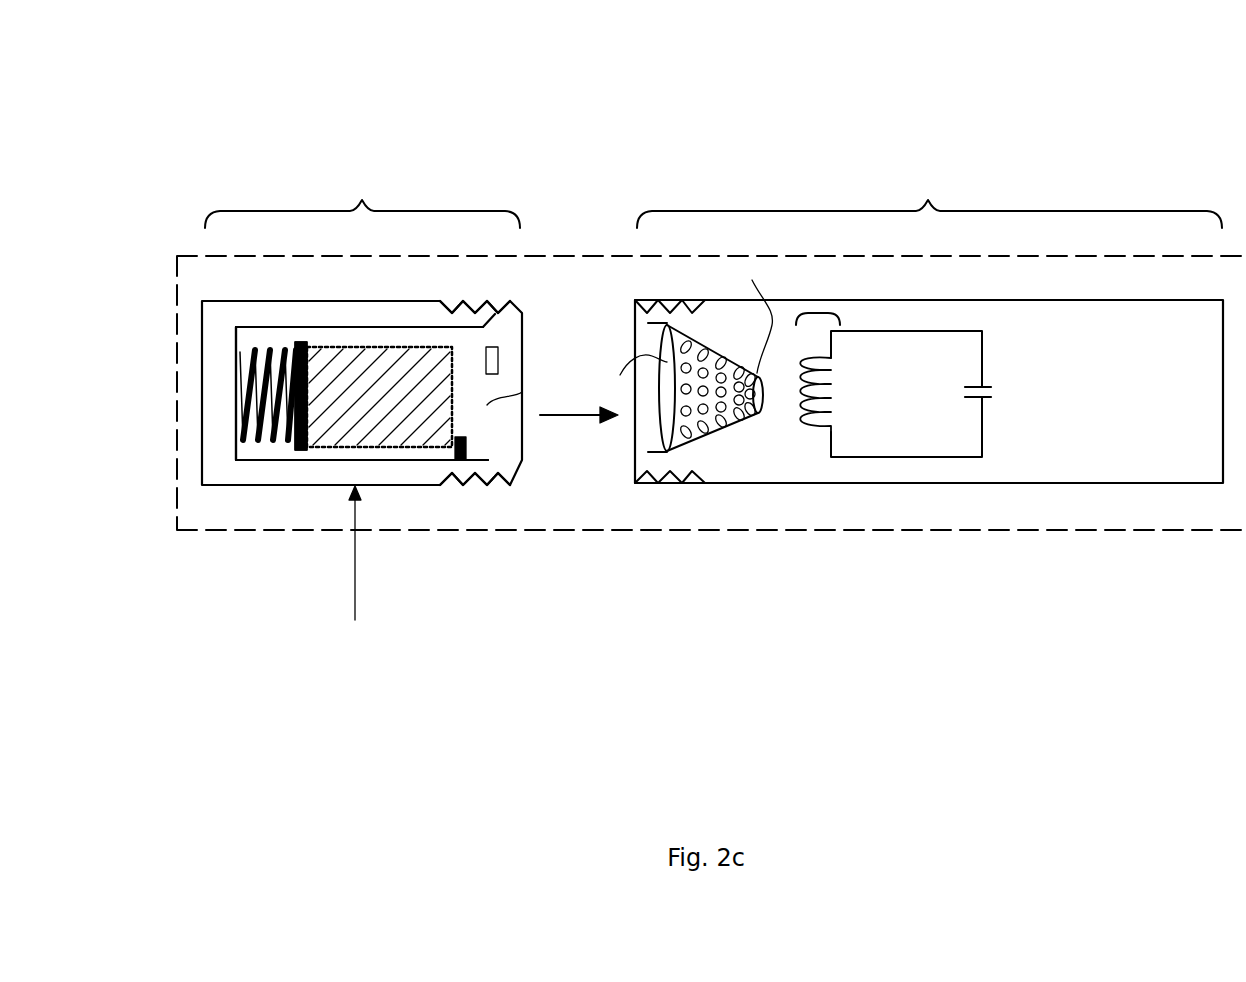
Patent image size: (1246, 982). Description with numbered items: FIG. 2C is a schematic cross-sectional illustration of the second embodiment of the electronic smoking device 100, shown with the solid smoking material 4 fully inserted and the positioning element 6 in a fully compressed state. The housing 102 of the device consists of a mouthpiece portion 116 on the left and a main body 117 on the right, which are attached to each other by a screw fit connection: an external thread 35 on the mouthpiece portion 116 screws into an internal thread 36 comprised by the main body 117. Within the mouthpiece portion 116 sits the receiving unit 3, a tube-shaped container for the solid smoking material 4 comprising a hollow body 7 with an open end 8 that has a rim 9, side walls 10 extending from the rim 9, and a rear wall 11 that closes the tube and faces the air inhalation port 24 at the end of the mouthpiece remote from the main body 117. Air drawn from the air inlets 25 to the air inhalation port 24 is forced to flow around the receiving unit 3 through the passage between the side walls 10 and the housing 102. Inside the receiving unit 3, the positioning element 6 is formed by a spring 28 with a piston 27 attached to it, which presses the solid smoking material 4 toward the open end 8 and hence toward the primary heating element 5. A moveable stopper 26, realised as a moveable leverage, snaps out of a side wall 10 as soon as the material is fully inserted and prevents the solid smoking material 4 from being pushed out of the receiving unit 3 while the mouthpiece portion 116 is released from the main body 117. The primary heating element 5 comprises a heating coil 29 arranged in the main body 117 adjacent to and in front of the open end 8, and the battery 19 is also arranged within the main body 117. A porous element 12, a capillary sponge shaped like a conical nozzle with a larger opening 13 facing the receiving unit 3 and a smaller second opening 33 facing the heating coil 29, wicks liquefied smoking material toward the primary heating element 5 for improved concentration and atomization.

The receiving unit 3 is at (380, 460).
The solid smoking material 4 is at (393, 412).
The primary heating element 5 is at (818, 313).
The positioning element 6 is at (247, 345).
The hollow body 7 is at (292, 452).
The open end 8 is at (522, 392).
The rim 9 is at (492, 308).
The side walls 10 is at (267, 460).
The rear wall 11 is at (237, 430).
The porous element 12 is at (738, 413).
The opening 13 is at (620, 375).
The battery 19 is at (991, 410).
The air inhalation port 24 is at (198, 393).
The air inlet 25 is at (498, 350).
The moveable stopper 26 is at (466, 446).
The piston 27 is at (301, 343).
The spring 28 is at (252, 460).
The heating coil 29 is at (812, 425).
The second opening 33 is at (752, 280).
The external thread 35 is at (505, 486).
The internal thread 36 is at (650, 483).
The electronic smoking device 100 is at (797, 256).
The housing 102 is at (355, 572).
The mouthpiece portion 116 is at (362, 197).
The main body 117 is at (929, 196).